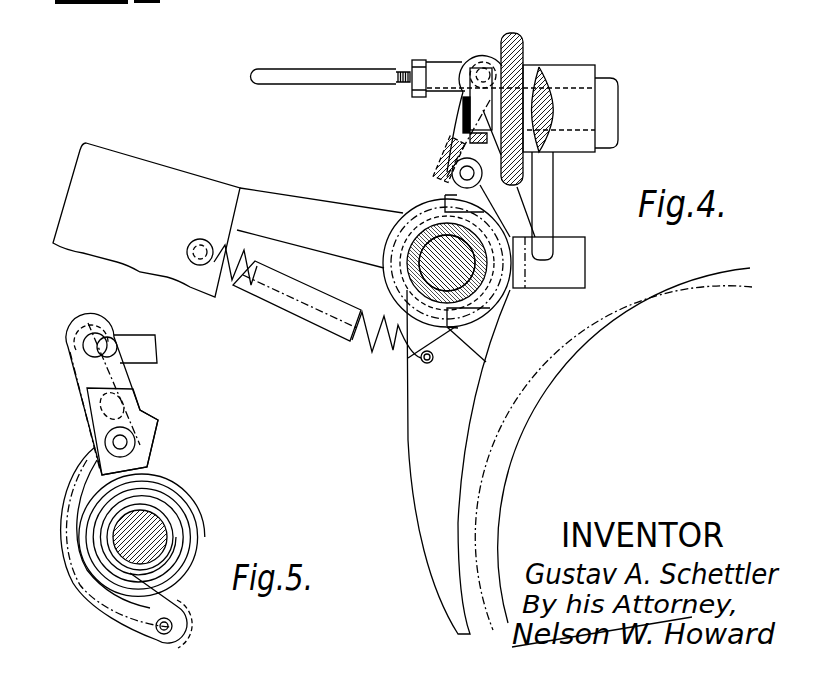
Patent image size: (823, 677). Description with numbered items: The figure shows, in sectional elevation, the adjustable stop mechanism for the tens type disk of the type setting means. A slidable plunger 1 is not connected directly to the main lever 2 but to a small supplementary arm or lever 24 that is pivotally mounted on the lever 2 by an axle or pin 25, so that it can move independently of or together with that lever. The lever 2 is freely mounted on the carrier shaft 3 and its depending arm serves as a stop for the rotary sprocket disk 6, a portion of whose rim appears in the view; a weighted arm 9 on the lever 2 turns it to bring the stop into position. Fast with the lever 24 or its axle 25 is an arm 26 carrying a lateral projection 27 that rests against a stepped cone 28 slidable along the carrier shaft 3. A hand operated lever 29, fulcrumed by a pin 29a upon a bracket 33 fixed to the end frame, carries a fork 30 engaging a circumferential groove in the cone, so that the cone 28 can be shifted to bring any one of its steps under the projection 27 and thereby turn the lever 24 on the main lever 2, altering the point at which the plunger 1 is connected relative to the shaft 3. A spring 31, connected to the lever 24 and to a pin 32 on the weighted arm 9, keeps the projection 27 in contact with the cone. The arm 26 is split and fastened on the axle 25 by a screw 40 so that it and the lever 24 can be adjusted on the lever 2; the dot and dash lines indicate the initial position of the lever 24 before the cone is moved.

In FIG. 4, the plunger 1 is at (344, 72).
In FIG. 5, the plunger 1 is at (157, 348).
In FIG. 4, the lever 2 is at (412, 392).
In FIG. 4, the carrier shaft 3 is at (420, 262).
In FIG. 5, the carrier shaft 3 is at (165, 517).
In FIG. 4, the sprocket disk 6 is at (664, 290).
In FIG. 4, the weighted arm 9 is at (153, 180).
In FIG. 4, the supplementary arm or lever 24 is at (457, 132).
In FIG. 5, the supplementary arm or lever 24 is at (92, 358).
In FIG. 4, the axle or pin 25 is at (462, 173).
In FIG. 5, the axle or pin 25 is at (128, 442).
In FIG. 4, the arm 26 is at (493, 327).
In FIG. 5, the arm 26 is at (123, 603).
In FIG. 4, the lateral projection 27 is at (520, 292).
In FIG. 5, the lateral projection 27 is at (66, 548).
In FIG. 5, the stepped cone 28 is at (193, 527).
In FIG. 4, the hand operated lever 29 is at (542, 68).
In FIG. 4, the pin 29a is at (608, 112).
In FIG. 4, the fork 30 is at (476, 330).
In FIG. 4, the spring 31 is at (313, 312).
In FIG. 4, the pin 32 is at (188, 252).
In FIG. 4, the bracket 33 is at (505, 33).
In FIG. 4, the screw 40 is at (436, 150).
In FIG. 5, the screw 40 is at (98, 414).